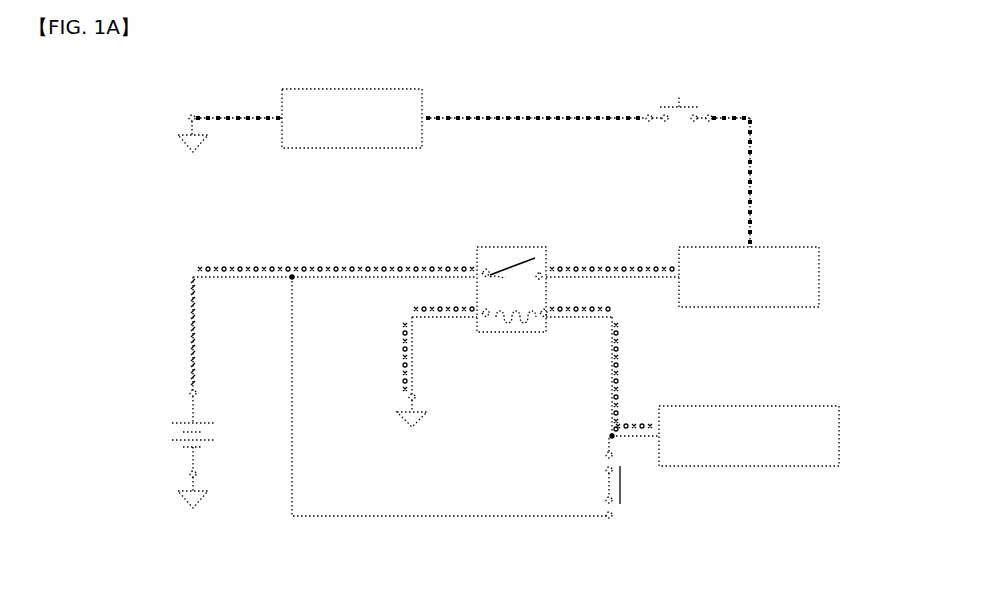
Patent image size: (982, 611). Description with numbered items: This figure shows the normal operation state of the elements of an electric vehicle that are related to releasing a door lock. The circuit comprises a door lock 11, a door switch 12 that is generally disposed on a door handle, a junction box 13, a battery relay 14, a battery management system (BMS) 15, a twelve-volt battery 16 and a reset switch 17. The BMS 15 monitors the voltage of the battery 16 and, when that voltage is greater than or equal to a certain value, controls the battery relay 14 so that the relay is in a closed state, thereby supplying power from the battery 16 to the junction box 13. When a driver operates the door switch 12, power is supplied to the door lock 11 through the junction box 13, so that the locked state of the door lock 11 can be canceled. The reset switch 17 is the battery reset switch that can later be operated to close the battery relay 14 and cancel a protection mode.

The door lock 11 is at (345, 149).
The door switch 12 is at (679, 98).
The junction box 13 is at (820, 277).
The battery relay 14 is at (505, 247).
The battery management system (BMS) 15 is at (740, 406).
The 12V battery 16 is at (170, 432).
The reset switch 17 is at (620, 485).